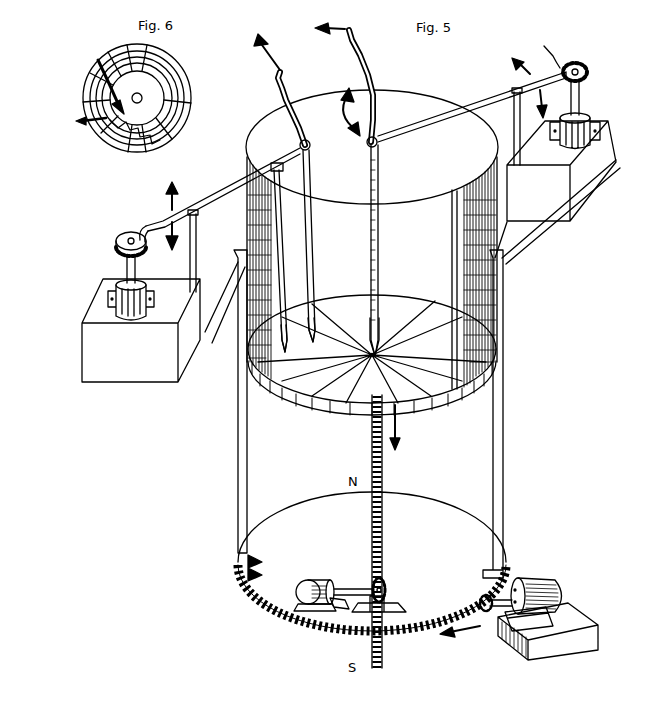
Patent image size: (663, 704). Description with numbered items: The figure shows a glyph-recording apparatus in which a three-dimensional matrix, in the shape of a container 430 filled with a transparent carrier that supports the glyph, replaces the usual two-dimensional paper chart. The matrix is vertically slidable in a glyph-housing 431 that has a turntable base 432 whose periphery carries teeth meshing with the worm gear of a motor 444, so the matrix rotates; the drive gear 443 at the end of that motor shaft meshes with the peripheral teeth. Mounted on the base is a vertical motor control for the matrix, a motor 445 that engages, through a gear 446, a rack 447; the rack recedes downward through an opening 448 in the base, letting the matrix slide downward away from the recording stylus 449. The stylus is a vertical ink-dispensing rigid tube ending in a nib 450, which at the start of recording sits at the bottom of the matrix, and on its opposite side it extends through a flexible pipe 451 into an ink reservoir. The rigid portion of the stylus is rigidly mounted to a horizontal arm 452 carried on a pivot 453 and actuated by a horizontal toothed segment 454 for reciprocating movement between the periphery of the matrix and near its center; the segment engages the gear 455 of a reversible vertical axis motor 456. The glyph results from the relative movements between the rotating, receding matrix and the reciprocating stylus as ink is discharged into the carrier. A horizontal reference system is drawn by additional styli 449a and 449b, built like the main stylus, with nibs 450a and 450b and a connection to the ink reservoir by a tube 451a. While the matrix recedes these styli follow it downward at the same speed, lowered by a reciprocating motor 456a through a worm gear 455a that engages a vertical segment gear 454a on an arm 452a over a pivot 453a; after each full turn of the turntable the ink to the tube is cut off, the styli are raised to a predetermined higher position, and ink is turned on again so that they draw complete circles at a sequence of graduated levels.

In FIG. 5, the container 430 is at (418, 95).
In FIG. 5, the glyph-housing 431 is at (250, 467).
In FIG. 5, the turntable base 432 is at (268, 620).
In FIG. 6, the turntable base 432 is at (192, 97).
In FIG. 5, the pinion 443 is at (494, 600).
In FIG. 5, the motor 444 is at (556, 590).
In FIG. 5, the motor 445 is at (314, 582).
In FIG. 5, the gear 446 is at (372, 588).
In FIG. 5, the rack 447 is at (394, 500).
In FIG. 5, the opening 448 is at (404, 608).
In FIG. 5, the recording stylus 449 is at (380, 262).
In FIG. 5, the stylus 449a is at (316, 262).
In FIG. 5, the stylus 449b is at (288, 254).
In FIG. 5, the nib 450 is at (380, 336).
In FIG. 6, the nib 450 is at (104, 130).
In FIG. 5, the nib 450a is at (317, 335).
In FIG. 5, the nib 450b is at (290, 308).
In FIG. 5, the flexible pipe 451 is at (362, 63).
In FIG. 5, the tube 451a is at (289, 88).
In FIG. 5, the horizontal arm 452 is at (430, 125).
In FIG. 6, the horizontal arm 452 is at (110, 56).
In FIG. 5, the arm 452a is at (232, 182).
In FIG. 5, the pivot 453 is at (513, 125).
In FIG. 5, the pivot 453a is at (197, 278).
In FIG. 5, the horizontal toothed segment 454 is at (562, 58).
In FIG. 5, the vertical segment gear 454a is at (144, 226).
In FIG. 5, the gear 455 is at (588, 77).
In FIG. 5, the worm gear 455a is at (118, 240).
In FIG. 5, the vertical axis motor 456 is at (588, 120).
In FIG. 5, the reciprocating motor 456a is at (150, 296).